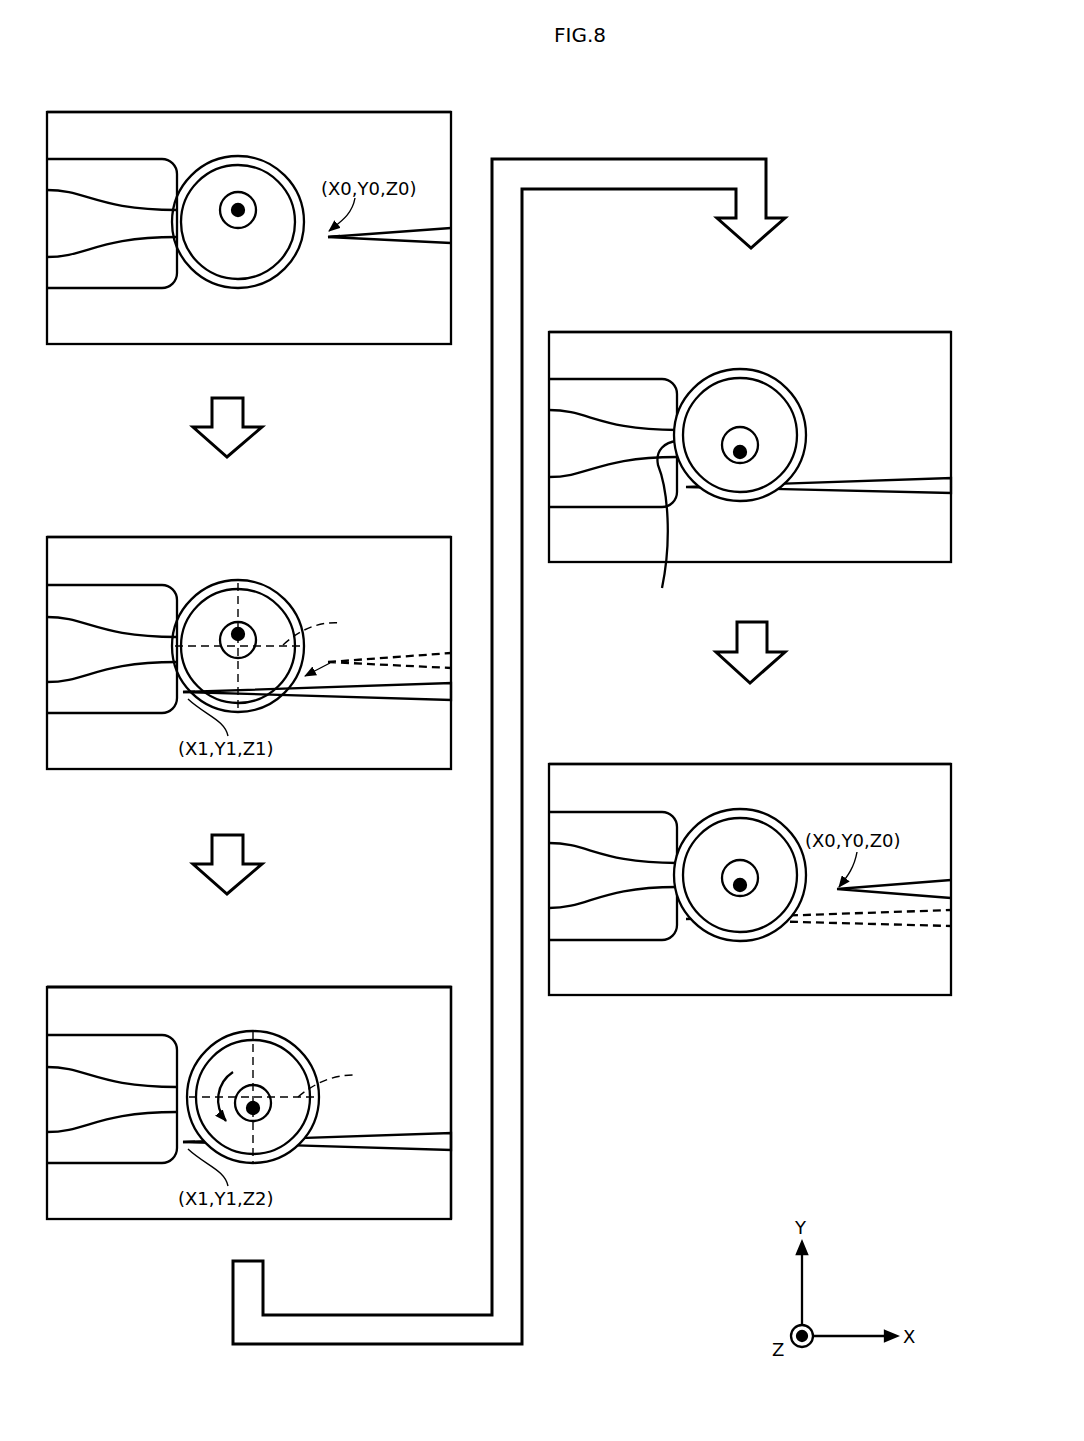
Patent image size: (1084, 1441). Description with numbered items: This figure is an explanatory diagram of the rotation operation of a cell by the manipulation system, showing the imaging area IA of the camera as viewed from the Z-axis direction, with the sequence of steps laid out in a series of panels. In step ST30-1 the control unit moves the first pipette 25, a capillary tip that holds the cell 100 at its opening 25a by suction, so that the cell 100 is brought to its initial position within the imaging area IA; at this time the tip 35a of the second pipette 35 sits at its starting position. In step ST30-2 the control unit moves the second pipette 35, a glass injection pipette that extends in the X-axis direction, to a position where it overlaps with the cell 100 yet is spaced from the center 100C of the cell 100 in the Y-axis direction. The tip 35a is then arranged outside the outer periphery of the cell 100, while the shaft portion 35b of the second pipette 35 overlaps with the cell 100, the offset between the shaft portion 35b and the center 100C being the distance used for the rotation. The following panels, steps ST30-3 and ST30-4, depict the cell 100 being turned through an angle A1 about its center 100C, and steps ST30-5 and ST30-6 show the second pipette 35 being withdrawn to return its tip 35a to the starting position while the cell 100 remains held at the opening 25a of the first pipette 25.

The first pipette 25 is at (112, 158).
The opening of the first pipette 25a is at (662, 528).
The second pipette 35 is at (397, 244).
The tip of the second pipette 35a is at (330, 241).
The shaft portion of the second pipette 35b is at (288, 699).
The cell 100 is at (238, 156).
The center of the cell 100C is at (243, 632).
The rotation angle A1 is at (293, 859).
The imaging area IA is at (316, 112).
The step of moving the cell to the initial position ST30-1 is at (401, 102).
The step of moving the second pipette ST30-2 is at (401, 527).
The step 30-3 ST30-3 is at (401, 977).
The step 30-4 ST30-4 is at (250, 1069).
The step 30-5 ST30-5 is at (894, 322).
The step 30-6 ST30-6 is at (894, 754).